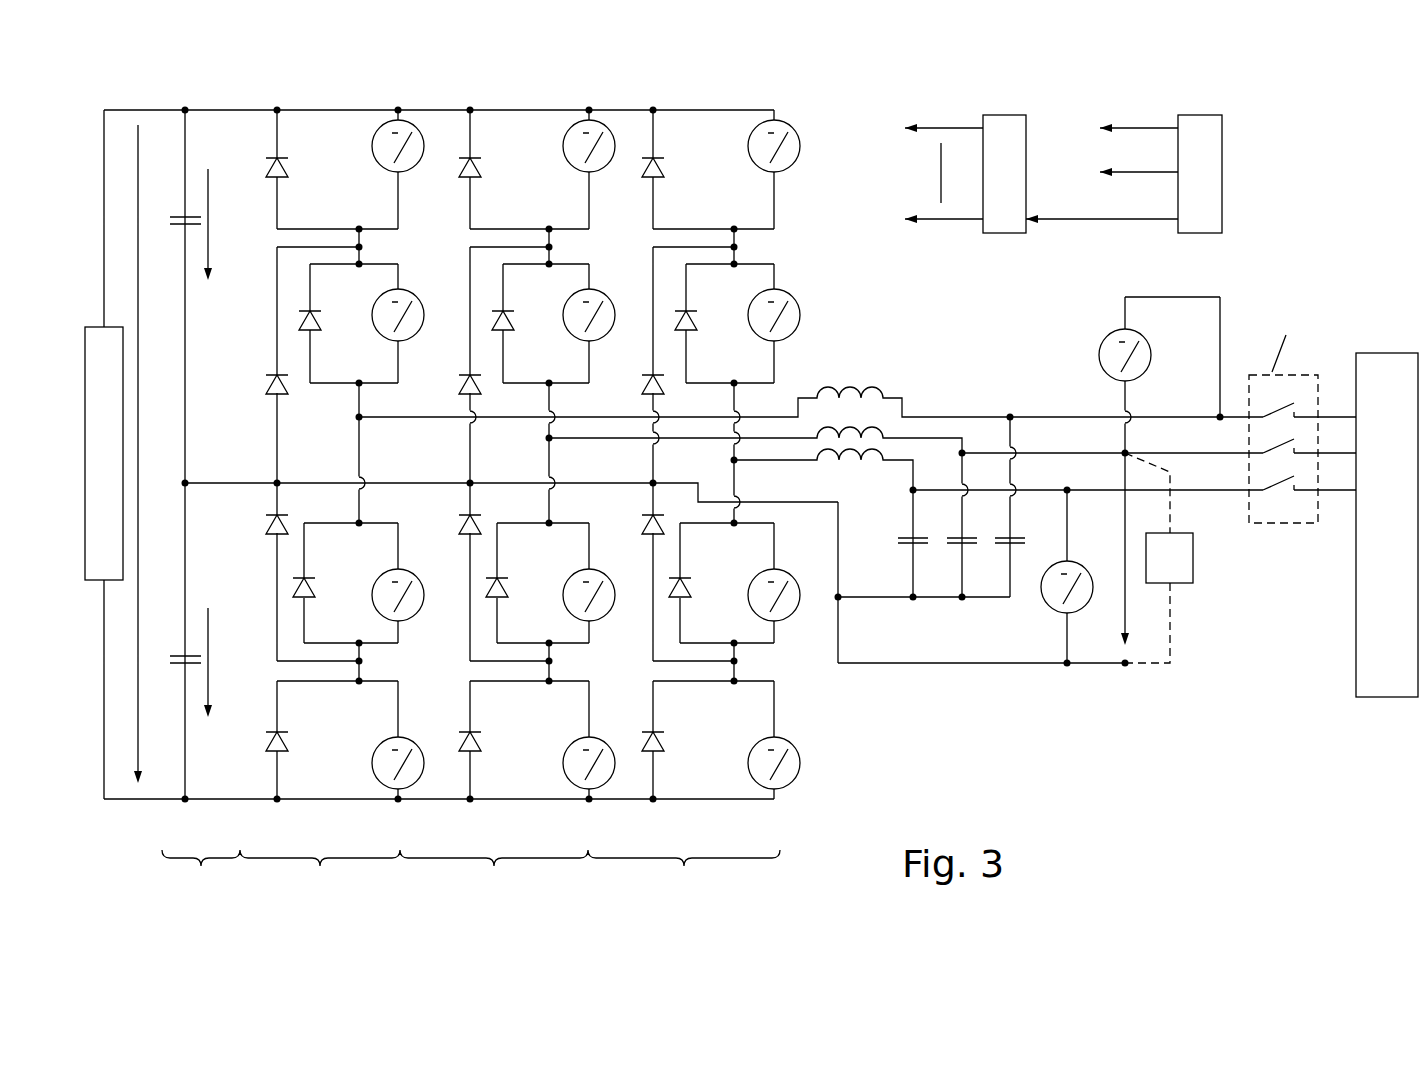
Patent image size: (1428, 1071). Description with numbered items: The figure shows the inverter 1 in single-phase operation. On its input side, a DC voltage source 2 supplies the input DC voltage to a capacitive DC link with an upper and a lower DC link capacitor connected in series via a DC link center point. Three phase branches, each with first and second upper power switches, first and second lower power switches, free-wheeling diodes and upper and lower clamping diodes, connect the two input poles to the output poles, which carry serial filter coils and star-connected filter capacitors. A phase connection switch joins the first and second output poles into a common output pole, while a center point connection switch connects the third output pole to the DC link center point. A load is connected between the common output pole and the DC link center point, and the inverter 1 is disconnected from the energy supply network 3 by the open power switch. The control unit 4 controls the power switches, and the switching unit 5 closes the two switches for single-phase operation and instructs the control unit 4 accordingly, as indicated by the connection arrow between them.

The inverter 1 is at (1230, 262).
The DC voltage source 2 is at (93, 463).
The energy supply network 3 is at (1335, 664).
The control unit 4 is at (993, 183).
The switching unit 5 is at (1189, 183).